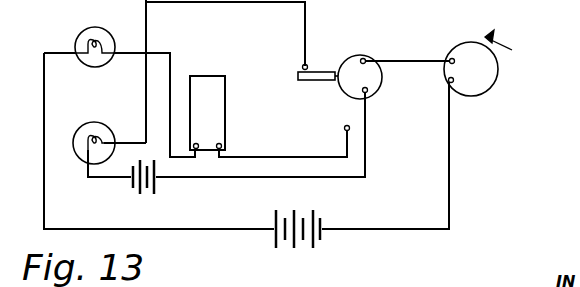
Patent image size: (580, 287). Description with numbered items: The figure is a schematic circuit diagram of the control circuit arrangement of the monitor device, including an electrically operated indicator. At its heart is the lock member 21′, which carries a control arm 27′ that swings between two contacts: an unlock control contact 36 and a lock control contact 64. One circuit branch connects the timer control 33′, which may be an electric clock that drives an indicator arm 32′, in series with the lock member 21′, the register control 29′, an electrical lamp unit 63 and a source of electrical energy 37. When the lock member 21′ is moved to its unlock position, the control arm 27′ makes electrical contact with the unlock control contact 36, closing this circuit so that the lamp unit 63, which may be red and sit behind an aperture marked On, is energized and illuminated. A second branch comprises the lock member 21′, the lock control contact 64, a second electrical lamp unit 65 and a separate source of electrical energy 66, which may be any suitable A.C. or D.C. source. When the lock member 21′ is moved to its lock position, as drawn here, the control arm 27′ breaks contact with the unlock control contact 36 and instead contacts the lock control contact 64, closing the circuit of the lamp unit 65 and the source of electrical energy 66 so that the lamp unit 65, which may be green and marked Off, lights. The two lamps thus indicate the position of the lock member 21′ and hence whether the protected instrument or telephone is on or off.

The electrical lamp unit 63 is at (97, 63).
The electrical lamp unit 65 is at (88, 127).
The source of electrical energy 66 is at (143, 194).
The register control 29′ is at (210, 115).
The lock control contact 64 is at (302, 67).
The control arm 27′ is at (326, 82).
The lock member 21′ is at (373, 79).
The unlock control contact 36 is at (344, 128).
The timer control 33′ is at (482, 82).
The indicator arm 32′ is at (513, 45).
The source of electrical energy 37 is at (296, 246).